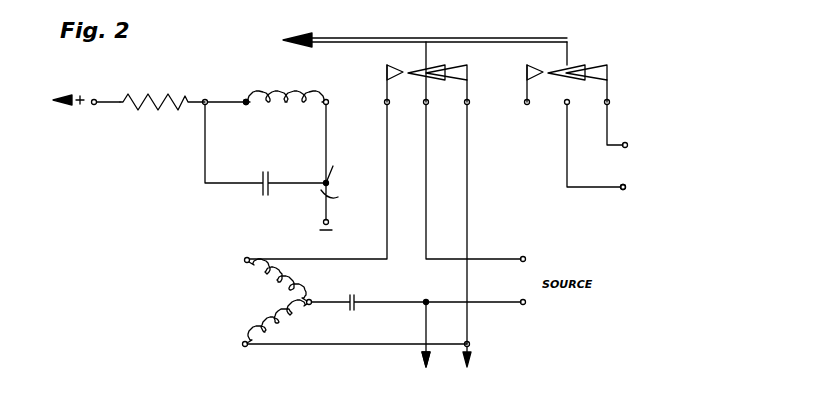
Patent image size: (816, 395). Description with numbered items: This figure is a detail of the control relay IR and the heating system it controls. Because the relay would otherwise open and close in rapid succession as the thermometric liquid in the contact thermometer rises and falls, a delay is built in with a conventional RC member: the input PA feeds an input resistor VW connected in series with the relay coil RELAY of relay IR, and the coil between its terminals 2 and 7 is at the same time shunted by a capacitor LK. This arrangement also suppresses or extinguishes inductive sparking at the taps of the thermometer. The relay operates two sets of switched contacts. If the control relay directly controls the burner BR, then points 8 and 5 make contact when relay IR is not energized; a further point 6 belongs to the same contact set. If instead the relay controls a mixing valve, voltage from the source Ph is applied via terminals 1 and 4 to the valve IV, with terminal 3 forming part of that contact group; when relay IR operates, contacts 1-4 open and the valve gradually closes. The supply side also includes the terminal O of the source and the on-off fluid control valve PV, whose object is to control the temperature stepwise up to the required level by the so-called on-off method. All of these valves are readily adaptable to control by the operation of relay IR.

The terminal 1 is at (464, 162).
The terminal 2 is at (245, 113).
The terminal 3 is at (326, 162).
The terminal 4 is at (473, 212).
The contact point 5 is at (616, 114).
The terminal 6 is at (530, 95).
The terminal 7 is at (332, 142).
The contact point 8 is at (587, 127).
The input connection PA is at (75, 102).
The input resistor VW is at (171, 92).
The relay coil RELAY is at (291, 90).
The capacitor LK is at (265, 156).
The control relay IR is at (425, 31).
The burner BR is at (636, 176).
The on-off fluid control valve PV is at (260, 302).
The voltage source Ph is at (536, 261).
The source terminal O is at (532, 304).
The valve IV is at (436, 370).